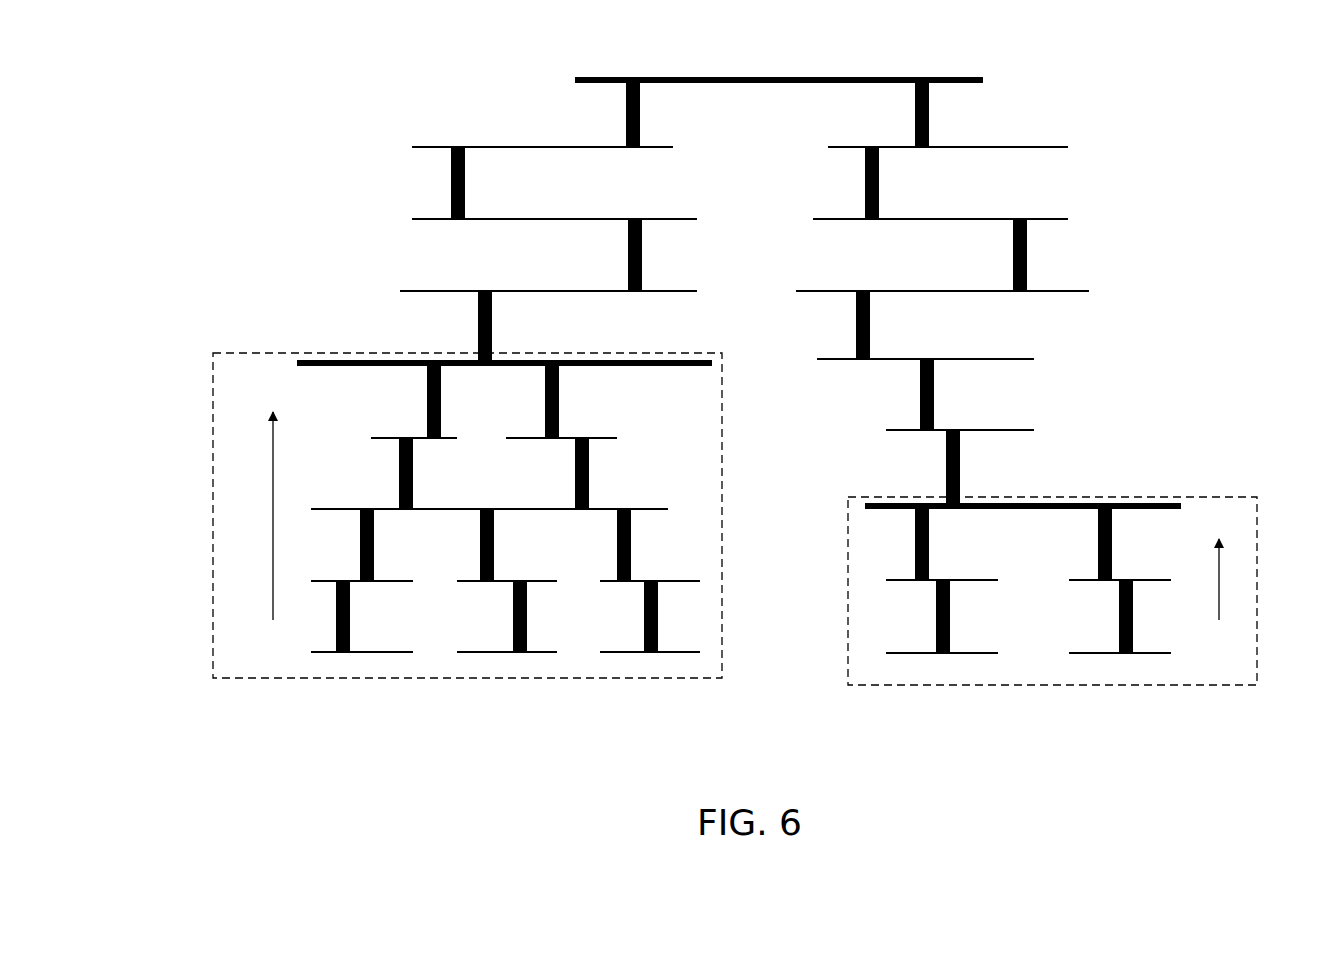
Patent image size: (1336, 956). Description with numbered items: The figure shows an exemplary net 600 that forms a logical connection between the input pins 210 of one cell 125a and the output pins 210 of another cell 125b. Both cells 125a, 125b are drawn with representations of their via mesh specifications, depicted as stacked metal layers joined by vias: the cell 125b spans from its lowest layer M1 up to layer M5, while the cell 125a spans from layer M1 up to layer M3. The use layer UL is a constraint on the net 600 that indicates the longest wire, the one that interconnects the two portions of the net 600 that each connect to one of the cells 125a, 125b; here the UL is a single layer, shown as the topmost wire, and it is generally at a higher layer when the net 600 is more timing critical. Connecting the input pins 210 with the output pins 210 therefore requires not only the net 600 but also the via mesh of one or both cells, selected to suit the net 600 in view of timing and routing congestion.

The net 600 is at (1241, 88).
The use layer UL is at (613, 78).
The cell 125b is at (213, 670).
The cell 125a is at (848, 670).
The pins 210 is at (606, 665).
The metal layer M5 is at (481, 366).
The metal layer M3 is at (1051, 514).
The metal layer M1 is at (271, 536).